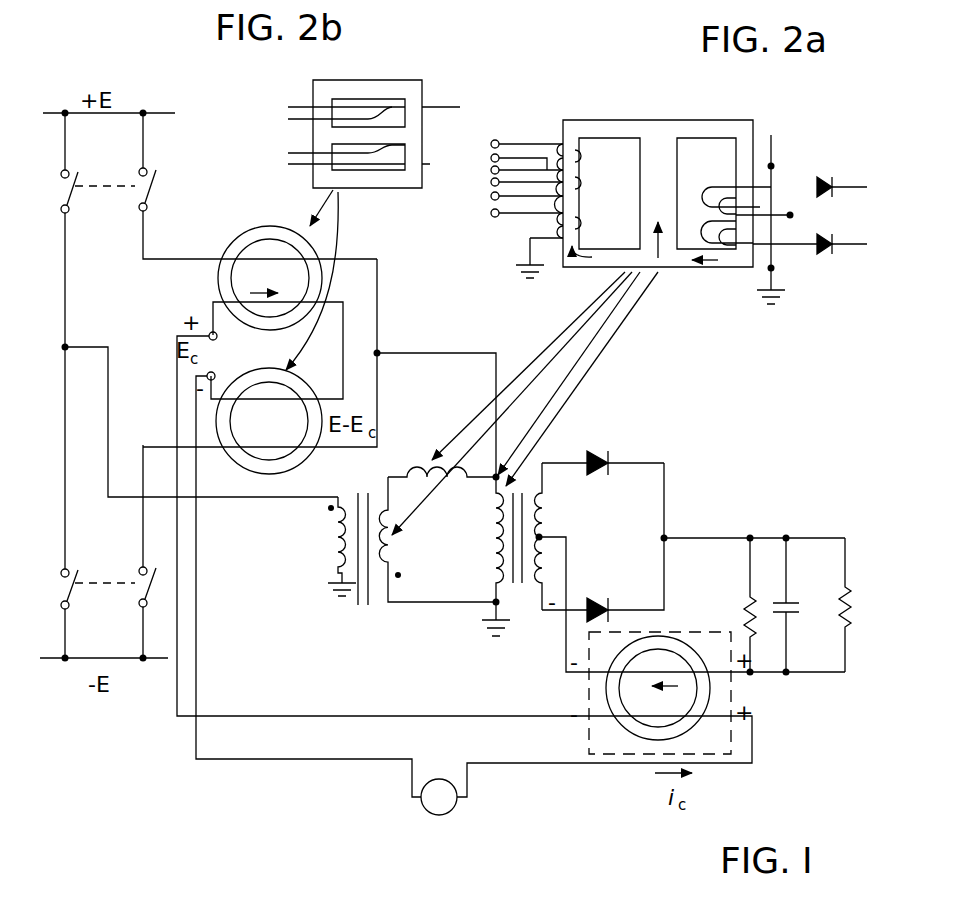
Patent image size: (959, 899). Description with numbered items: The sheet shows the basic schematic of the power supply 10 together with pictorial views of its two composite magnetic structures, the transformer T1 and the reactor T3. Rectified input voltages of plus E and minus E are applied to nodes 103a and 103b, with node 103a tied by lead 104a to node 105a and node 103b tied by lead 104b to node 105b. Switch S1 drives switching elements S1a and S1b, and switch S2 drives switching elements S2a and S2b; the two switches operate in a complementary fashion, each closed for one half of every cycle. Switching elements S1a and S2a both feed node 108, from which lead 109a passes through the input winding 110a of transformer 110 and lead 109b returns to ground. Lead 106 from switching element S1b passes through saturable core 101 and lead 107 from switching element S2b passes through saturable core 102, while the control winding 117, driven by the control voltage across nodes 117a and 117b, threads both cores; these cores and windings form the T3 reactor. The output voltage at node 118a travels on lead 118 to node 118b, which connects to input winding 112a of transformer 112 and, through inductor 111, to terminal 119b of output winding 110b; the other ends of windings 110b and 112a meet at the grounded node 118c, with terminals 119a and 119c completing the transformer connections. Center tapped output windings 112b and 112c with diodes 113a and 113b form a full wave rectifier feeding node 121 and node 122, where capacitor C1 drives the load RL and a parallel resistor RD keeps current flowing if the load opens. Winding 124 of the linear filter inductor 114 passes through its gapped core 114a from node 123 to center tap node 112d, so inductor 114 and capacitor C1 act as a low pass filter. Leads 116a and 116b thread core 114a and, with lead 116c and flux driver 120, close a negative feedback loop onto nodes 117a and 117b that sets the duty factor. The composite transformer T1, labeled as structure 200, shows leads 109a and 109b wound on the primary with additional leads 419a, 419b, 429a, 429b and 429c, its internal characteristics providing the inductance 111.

In FIG. 1, the power supply circuit 10 is at (632, 792).
In FIG. 1, the saturable core 101 is at (258, 232).
In FIG. 1, the saturable core 102 is at (303, 388).
In FIG. 1, the node 103a is at (65, 112).
In FIG. 1, the node 103b is at (65, 660).
In FIG. 1, the lead 104a is at (125, 112).
In FIG. 1, the negative supply bus 104b is at (88, 660).
In FIG. 1, the node 105a is at (144, 112).
In FIG. 1, the node 105b is at (148, 660).
In FIG. 1, the lead 106 is at (188, 258).
In FIG. 2B, the lead 106 is at (290, 106).
In FIG. 1, the lead 107 is at (212, 448).
In FIG. 2B, the lead 107 is at (288, 153).
In FIG. 1, the node 108 is at (66, 346).
In FIG. 1, the lead 109a is at (266, 497).
In FIG. 2A, the lead 109a is at (493, 215).
In FIG. 1, the lead 109b is at (338, 573).
In FIG. 2A, the lead 109b is at (530, 238).
In FIG. 1, the transformer 110 is at (386, 552).
In FIG. 1, the input winding 110a is at (338, 538).
In FIG. 1, the output winding 110b is at (390, 556).
In FIG. 1, the inductor 111 is at (416, 470).
In FIG. 1, the transformer 112 is at (635, 567).
In FIG. 2A, the transformer 112 is at (780, 198).
In FIG. 1, the input winding 112a is at (494, 566).
In FIG. 2A, the input winding 112a is at (708, 204).
In FIG. 1, the output winding 112b is at (580, 504).
In FIG. 2A, the output winding 112b is at (720, 196).
In FIG. 1, the output winding 112c is at (552, 566).
In FIG. 2A, the output winding 112c is at (702, 262).
In FIG. 1, the node 112d is at (541, 537).
In FIG. 2A, the node 112d is at (793, 217).
In FIG. 1, the diode 113a is at (592, 455).
In FIG. 2A, the diode 113a is at (830, 182).
In FIG. 1, the diode 113b is at (612, 612).
In FIG. 2A, the diode 113b is at (823, 256).
In FIG. 1, the linear filter inductor 114 is at (590, 700).
In FIG. 1, the core 114a is at (705, 697).
In FIG. 1, the lead 116a is at (370, 716).
In FIG. 1, the lead 116b is at (556, 764).
In FIG. 1, the lead 116c is at (215, 762).
In FIG. 1, the lead 117 is at (343, 312).
In FIG. 2B, the lead 117 is at (288, 119).
In FIG. 1, the node 117a is at (464, 564).
In FIG. 1, the node 117b is at (308, 579).
In FIG. 1, the lead 118 is at (487, 352).
In FIG. 1, the node 118a is at (388, 352).
In FIG. 1, the node 118b is at (494, 474).
In FIG. 2A, the node 118b is at (774, 167).
In FIG. 1, the node 118c is at (490, 606).
In FIG. 2A, the node 118c is at (774, 270).
In FIG. 1, the transformer terminal 119a is at (420, 603).
In FIG. 1, the terminal 119b is at (386, 478).
In FIG. 1, the transformer terminal 119c is at (494, 481).
In FIG. 1, the flux driver 120 is at (438, 778).
In FIG. 1, the node 121 is at (666, 537).
In FIG. 1, the node 122 is at (788, 537).
In FIG. 1, the node 123 is at (788, 674).
In FIG. 1, the winding 124 is at (568, 586).
In FIG. 2A, the transformer assembly 200 is at (592, 118).
In FIG. 2A, the lead 419a is at (496, 140).
In FIG. 2A, the lead 419b is at (498, 155).
In FIG. 2A, the lead 429a is at (498, 144).
In FIG. 2A, the lead 429b is at (494, 186).
In FIG. 2A, the lead 429c is at (496, 172).
In FIG. 1, the switch S1 is at (115, 186).
In FIG. 1, the switching element S1a is at (68, 200).
In FIG. 1, the switching element S1b is at (150, 194).
In FIG. 1, the switch S2 is at (98, 583).
In FIG. 1, the switching element S2a is at (70, 590).
In FIG. 1, the switching element S2b is at (148, 590).
In FIG. 2A, the composite transformer T1 is at (655, 118).
In FIG. 2B, the reactor T3 is at (425, 96).
In FIG. 1, the capacitor C1 is at (790, 603).
In FIG. 1, the resistor RD is at (763, 605).
In FIG. 1, the load resistor RL is at (852, 615).